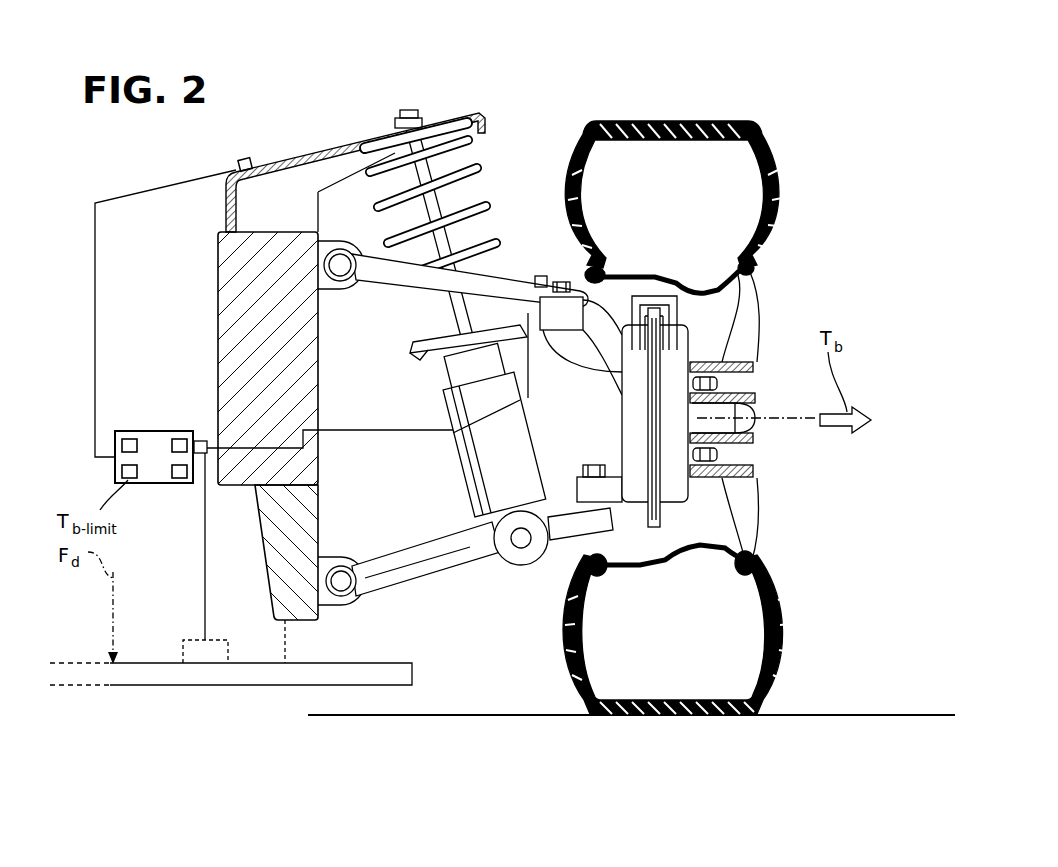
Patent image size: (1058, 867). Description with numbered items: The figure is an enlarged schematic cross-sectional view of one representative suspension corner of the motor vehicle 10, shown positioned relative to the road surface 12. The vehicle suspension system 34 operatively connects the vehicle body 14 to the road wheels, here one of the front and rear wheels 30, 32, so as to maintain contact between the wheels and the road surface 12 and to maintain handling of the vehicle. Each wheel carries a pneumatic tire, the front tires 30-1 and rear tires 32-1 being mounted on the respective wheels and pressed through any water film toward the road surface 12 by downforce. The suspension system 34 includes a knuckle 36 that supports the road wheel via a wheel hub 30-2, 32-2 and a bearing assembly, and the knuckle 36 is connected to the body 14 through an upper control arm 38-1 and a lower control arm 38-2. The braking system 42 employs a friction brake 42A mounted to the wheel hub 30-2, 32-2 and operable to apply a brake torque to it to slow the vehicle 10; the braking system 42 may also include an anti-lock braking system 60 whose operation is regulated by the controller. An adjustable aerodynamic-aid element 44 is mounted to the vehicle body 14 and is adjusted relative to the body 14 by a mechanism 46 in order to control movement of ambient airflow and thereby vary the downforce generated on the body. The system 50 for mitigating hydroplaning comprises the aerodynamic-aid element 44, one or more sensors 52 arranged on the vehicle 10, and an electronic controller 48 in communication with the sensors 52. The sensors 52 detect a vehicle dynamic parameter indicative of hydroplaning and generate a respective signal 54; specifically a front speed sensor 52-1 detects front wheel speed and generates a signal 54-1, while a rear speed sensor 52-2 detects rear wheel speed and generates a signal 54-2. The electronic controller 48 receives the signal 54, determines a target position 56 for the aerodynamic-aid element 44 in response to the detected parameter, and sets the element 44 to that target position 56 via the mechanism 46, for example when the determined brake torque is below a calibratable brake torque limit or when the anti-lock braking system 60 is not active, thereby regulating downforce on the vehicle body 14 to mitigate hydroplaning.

The motor vehicle 10 is at (320, 125).
The road surface 12 is at (945, 713).
The vehicle body 14 is at (390, 120).
The front wheels 30 is at (737, 410).
The rear wheels 32 is at (737, 410).
The front tires 30-1 is at (729, 629).
The rear tires 32-1 is at (776, 622).
The wheel hub 30-2 is at (790, 419).
The wheel hub 32-2 is at (760, 430).
The vehicle suspension system 34 is at (355, 218).
The knuckle 36 is at (668, 355).
The upper control arm 38-1 is at (520, 292).
The lower control arm 38-2 is at (430, 565).
The braking system 42 is at (665, 273).
The friction brake 42A is at (665, 292).
The adjustable aerodynamic-aid element 44 is at (170, 662).
The mechanism 46 is at (226, 640).
The electronic controller 48 is at (162, 436).
The system 50 is at (729, 371).
The sensor 52 is at (247, 158).
The front speed sensor 52-1 is at (521, 238).
The rear speed sensor 52-2 is at (542, 275).
The signal 54 is at (162, 381).
The signal 54-1 is at (179, 438).
The signal 54-2 is at (128, 438).
The target position 56 is at (174, 480).
The anti-lock braking system 60 is at (200, 440).